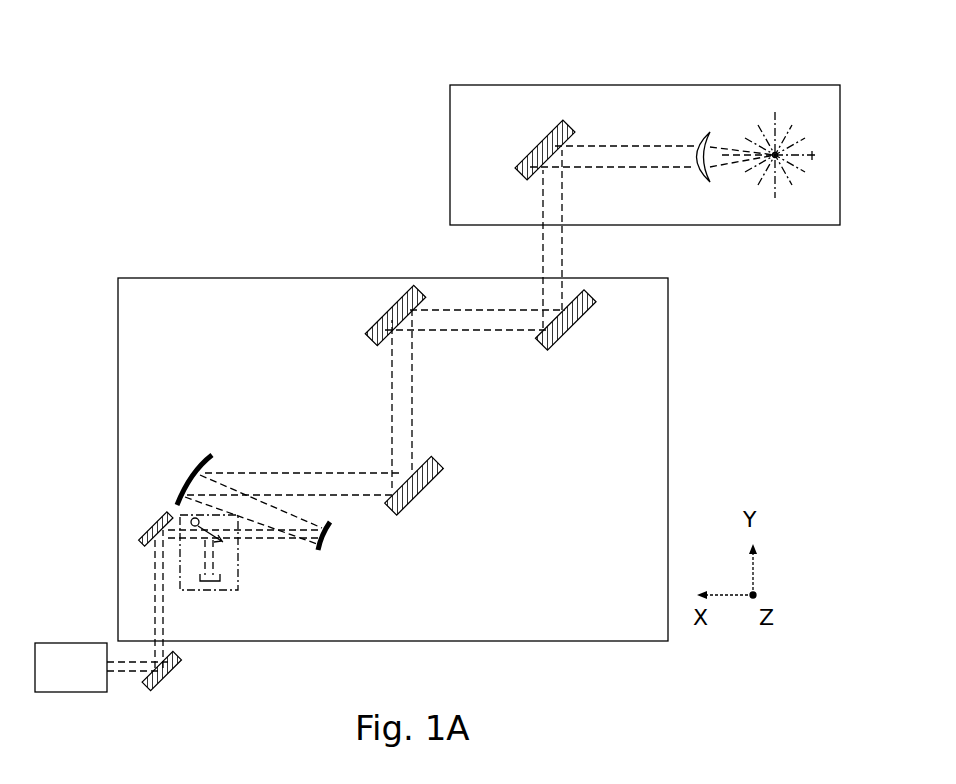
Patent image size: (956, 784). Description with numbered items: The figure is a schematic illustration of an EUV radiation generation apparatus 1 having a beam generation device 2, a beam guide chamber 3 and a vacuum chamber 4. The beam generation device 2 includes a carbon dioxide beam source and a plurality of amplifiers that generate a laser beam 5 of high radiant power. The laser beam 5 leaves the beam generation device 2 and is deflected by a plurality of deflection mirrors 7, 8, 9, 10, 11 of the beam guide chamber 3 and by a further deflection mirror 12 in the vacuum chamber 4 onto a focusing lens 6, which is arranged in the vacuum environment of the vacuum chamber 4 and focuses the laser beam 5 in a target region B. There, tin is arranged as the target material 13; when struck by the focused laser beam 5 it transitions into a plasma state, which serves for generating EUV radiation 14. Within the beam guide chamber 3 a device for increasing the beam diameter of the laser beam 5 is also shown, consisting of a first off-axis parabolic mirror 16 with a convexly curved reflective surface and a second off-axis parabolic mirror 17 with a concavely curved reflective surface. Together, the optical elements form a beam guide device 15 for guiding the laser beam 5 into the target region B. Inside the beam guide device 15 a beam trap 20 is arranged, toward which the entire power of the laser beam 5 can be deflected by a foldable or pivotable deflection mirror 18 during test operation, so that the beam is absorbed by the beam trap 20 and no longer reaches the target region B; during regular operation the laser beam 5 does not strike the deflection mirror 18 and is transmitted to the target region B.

The EUV radiation generation apparatus 1 is at (280, 103).
The beam generation device 2 is at (60, 652).
The beam guide chamber 3 is at (142, 380).
The vacuum chamber 4 is at (487, 98).
The laser beam 5 is at (120, 672).
The focusing lens 6 is at (697, 140).
The deflection mirror 7 is at (172, 675).
The deflection mirror 8 is at (148, 528).
The deflection mirror 9 is at (420, 490).
The deflection mirror 10 is at (393, 315).
The deflection mirror 11 is at (583, 305).
The further deflection mirror 12 is at (547, 140).
The target material 13 is at (775, 198).
The EUV radiation 14 is at (812, 160).
The beam guide device 15 is at (250, 393).
The first off-axis parabolic mirror 16 is at (326, 540).
The second off-axis parabolic mirror 17 is at (188, 475).
The deflection mirror 18 is at (200, 538).
The beam trap 20 is at (220, 578).
The target region B is at (772, 110).